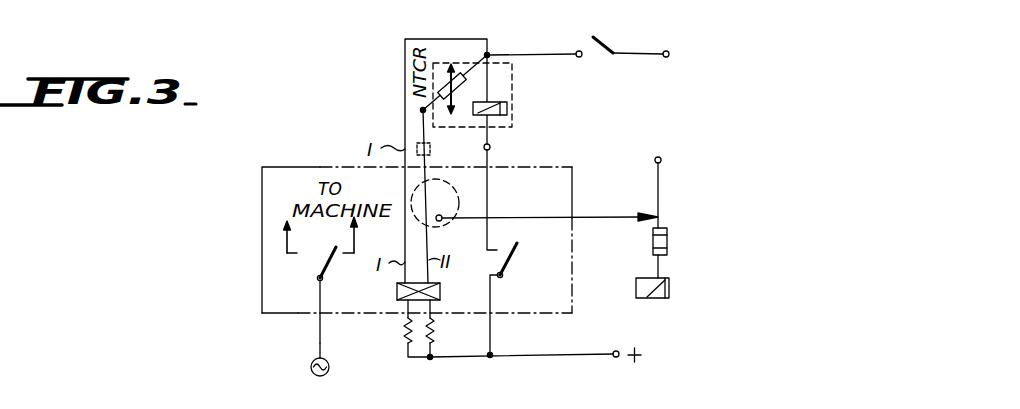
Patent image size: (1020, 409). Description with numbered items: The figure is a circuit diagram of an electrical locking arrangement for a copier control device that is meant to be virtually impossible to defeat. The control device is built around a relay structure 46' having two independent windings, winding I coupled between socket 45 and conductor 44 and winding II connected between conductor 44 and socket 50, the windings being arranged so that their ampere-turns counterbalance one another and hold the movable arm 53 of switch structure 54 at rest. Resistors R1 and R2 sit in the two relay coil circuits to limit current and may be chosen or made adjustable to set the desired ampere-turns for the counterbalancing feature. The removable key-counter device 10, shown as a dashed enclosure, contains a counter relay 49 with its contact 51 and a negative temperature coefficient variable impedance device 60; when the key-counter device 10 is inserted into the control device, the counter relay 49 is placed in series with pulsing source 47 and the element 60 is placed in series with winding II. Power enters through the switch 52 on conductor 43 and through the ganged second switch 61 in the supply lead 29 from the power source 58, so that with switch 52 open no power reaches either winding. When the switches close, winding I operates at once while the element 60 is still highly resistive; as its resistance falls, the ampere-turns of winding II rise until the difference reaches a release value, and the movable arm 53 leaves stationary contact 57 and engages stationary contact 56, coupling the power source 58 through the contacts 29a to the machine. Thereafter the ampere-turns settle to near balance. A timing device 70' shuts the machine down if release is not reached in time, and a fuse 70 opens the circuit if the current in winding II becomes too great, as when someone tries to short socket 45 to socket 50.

The key-counter device 10 is at (512, 95).
The power supply lead 29 is at (319, 343).
The contacts to machine 29a is at (302, 239).
The conductor 43 is at (535, 38).
The conductor 44 is at (526, 356).
The socket 45 is at (489, 53).
The relay structure 46' is at (440, 293).
The pulsing source 47 is at (507, 262).
The counter relay 49 is at (507, 108).
The socket 50 is at (421, 111).
The contact 51 is at (490, 147).
The switch 52 is at (607, 43).
The movable arm 53 is at (317, 277).
The switch structure 54 is at (332, 281).
The stationary contact 56 is at (337, 234).
The stationary contact 57 is at (286, 238).
The power source 58 is at (312, 373).
The variable impedance device 60 is at (466, 92).
The second switch 61 is at (324, 318).
The fuse 70 is at (675, 227).
The timing device 70' is at (534, 199).
The resistor R1 is at (405, 331).
The resistor R2 is at (436, 333).